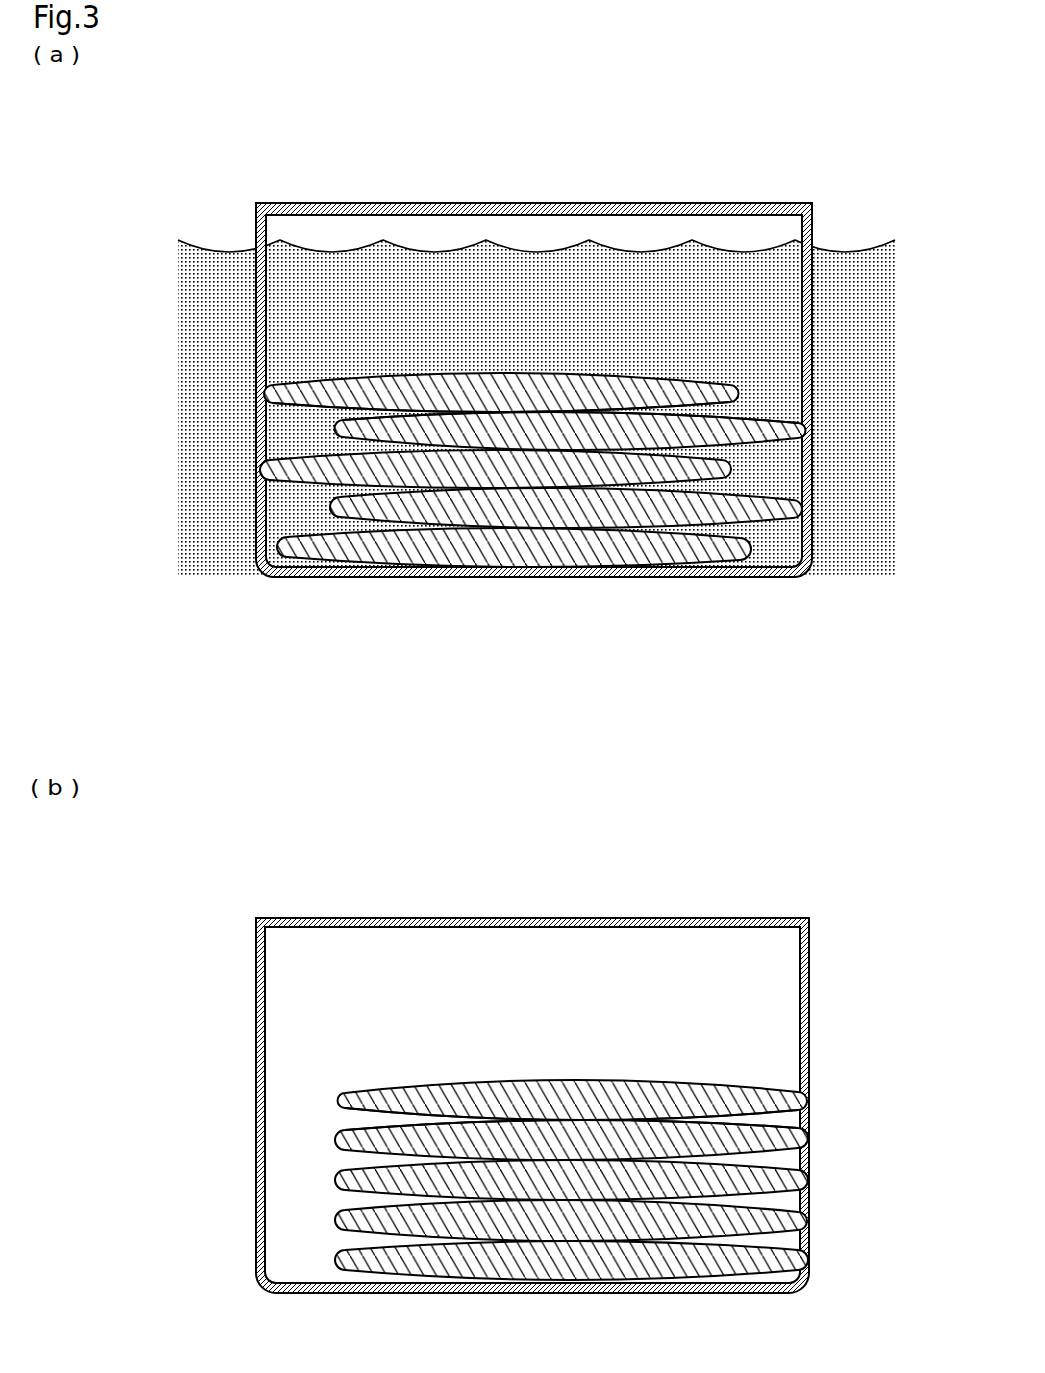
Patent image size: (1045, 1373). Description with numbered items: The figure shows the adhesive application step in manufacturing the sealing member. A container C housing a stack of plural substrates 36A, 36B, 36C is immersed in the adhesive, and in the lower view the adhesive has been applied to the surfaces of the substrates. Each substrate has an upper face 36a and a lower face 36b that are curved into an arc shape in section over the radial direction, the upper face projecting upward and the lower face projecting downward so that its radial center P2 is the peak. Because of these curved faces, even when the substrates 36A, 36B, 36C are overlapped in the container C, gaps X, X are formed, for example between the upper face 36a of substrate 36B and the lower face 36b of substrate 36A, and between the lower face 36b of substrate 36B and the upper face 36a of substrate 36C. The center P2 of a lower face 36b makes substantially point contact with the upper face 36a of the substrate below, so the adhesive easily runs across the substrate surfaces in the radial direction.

The substrate 36A is at (607, 371).
The substrate 36B is at (790, 448).
The substrate 36C is at (312, 486).
The upper face 36a is at (778, 413).
The lower face 36b is at (679, 413).
The gap X is at (352, 414).
The container C is at (812, 538).
The radial center of the lower face P2 is at (586, 1122).